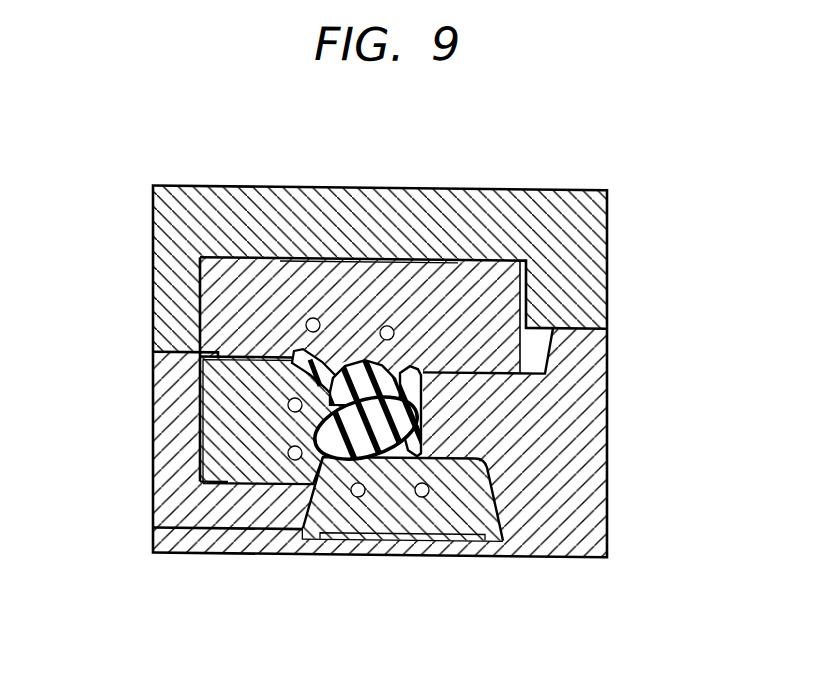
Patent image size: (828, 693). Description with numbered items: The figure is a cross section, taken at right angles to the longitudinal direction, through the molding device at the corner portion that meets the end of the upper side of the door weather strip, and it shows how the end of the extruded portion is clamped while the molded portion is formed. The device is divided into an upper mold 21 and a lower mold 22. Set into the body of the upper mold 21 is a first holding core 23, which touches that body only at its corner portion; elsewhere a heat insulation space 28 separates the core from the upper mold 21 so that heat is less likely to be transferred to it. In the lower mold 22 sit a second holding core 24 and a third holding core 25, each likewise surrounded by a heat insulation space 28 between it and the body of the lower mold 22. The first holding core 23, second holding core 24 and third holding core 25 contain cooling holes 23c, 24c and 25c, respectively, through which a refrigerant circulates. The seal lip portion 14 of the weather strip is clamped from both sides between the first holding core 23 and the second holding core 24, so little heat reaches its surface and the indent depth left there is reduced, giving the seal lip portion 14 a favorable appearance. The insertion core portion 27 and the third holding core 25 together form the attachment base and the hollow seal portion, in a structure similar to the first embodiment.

The seal lip portion 14 is at (325, 373).
The upper mold 21 is at (487, 224).
The lower mold 22 is at (605, 538).
The first holding core 23 is at (253, 297).
The cooling holes 23c is at (313, 316).
The second holding core 24 is at (198, 454).
The cooling holes 24c is at (293, 396).
The third holding core 25 is at (468, 499).
The cooling holes 25c is at (357, 496).
The insertion core portion 27 is at (423, 422).
The heat insulation space 28 is at (383, 254).